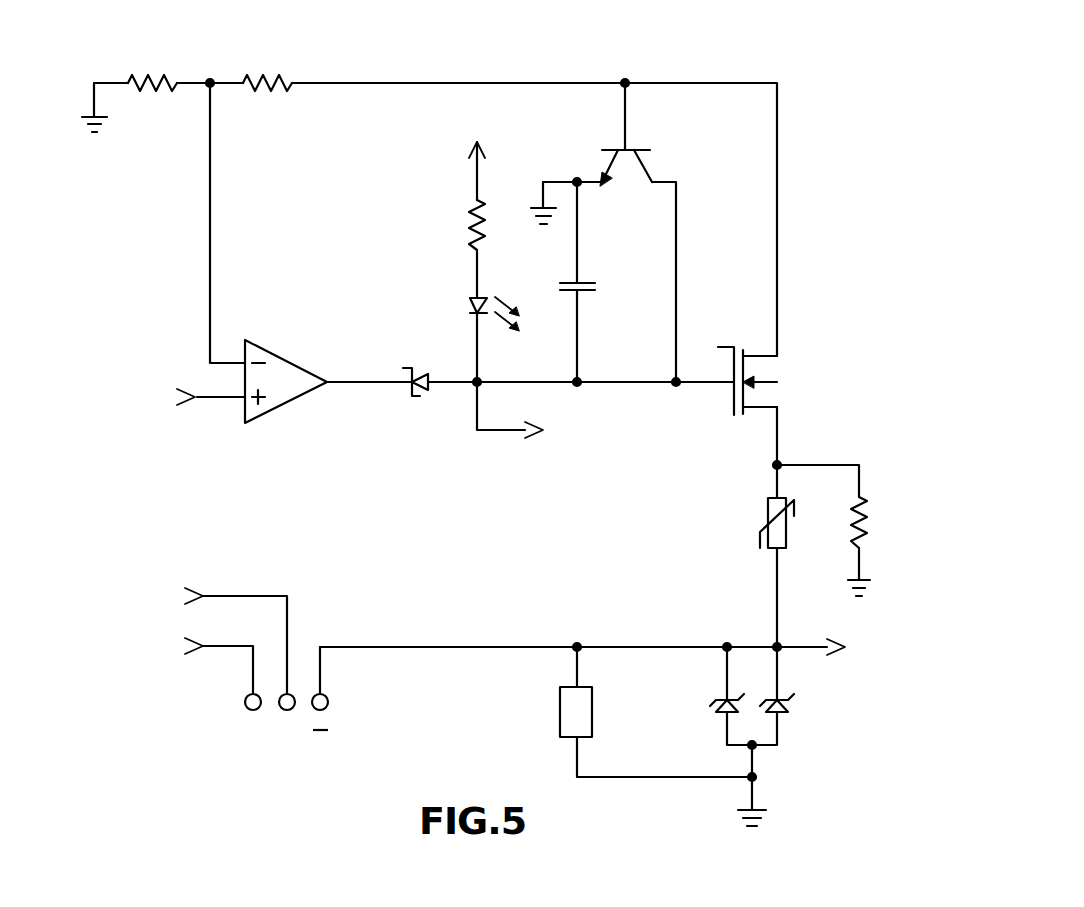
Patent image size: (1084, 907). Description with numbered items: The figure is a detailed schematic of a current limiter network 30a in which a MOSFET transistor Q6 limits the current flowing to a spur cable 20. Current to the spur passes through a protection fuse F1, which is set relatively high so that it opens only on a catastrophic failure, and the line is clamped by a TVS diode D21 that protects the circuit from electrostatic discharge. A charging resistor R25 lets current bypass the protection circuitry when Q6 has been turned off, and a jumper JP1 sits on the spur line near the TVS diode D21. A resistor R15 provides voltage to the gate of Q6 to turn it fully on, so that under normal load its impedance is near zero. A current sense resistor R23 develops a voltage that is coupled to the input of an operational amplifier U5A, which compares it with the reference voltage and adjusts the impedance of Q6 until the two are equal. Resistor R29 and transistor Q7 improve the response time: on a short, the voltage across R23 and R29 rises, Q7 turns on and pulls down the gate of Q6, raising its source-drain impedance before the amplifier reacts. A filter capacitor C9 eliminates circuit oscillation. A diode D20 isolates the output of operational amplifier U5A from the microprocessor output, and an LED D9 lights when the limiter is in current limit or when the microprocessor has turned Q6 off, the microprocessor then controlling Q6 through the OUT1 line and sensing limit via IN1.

The current limiter network 30a is at (814, 98).
The spur cable 20 is at (336, 682).
The current sense resistor R23 is at (151, 69).
The resistor R29 is at (267, 69).
The operational amplifier U5A is at (286, 371).
The diode D20 is at (417, 367).
The resistor R15 is at (451, 225).
The LED D9 is at (475, 313).
The filter capacitor C9 is at (595, 286).
The transistor Q7 is at (626, 179).
The MOSFET transistor Q6 is at (767, 381).
The protection fuse F1 is at (794, 523).
The charging resistor R25 is at (884, 522).
The jumper JP1 is at (598, 712).
The TVS diode D21 is at (777, 710).